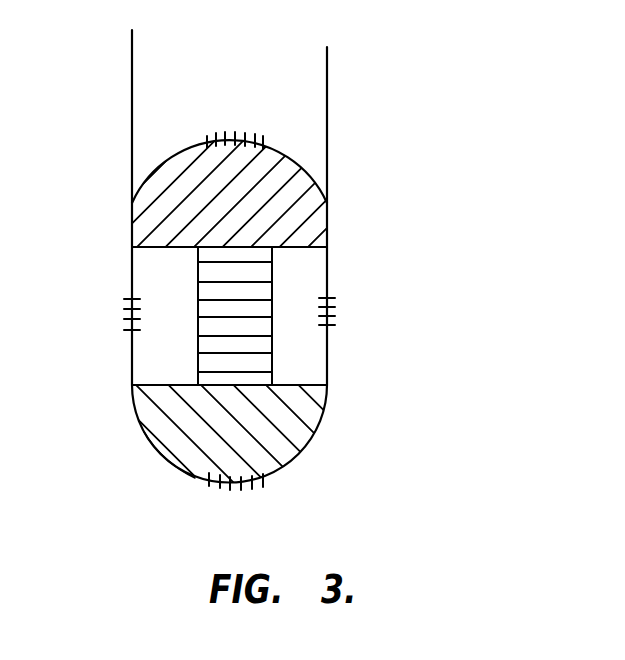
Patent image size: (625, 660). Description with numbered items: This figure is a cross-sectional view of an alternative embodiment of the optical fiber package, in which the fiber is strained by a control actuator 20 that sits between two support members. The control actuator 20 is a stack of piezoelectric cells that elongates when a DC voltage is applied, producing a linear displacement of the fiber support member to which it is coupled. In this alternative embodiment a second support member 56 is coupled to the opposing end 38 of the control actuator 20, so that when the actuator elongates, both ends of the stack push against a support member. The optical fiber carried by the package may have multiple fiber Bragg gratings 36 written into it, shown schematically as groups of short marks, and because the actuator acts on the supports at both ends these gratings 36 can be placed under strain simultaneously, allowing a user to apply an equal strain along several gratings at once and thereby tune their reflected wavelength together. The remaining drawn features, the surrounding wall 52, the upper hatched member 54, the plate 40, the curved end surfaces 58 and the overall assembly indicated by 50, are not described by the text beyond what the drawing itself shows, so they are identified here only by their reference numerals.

The control actuator 20 is at (380, 316).
The fiber Bragg gratings 36 is at (240, 136).
The opposing end 38 is at (220, 387).
The top plate 40 is at (272, 250).
The delivery assembly 50 is at (453, 114).
The tube wall 52 is at (327, 101).
The upper plug 54 is at (320, 180).
The second support member 56 is at (322, 409).
The curved plug surface 58 is at (200, 139).